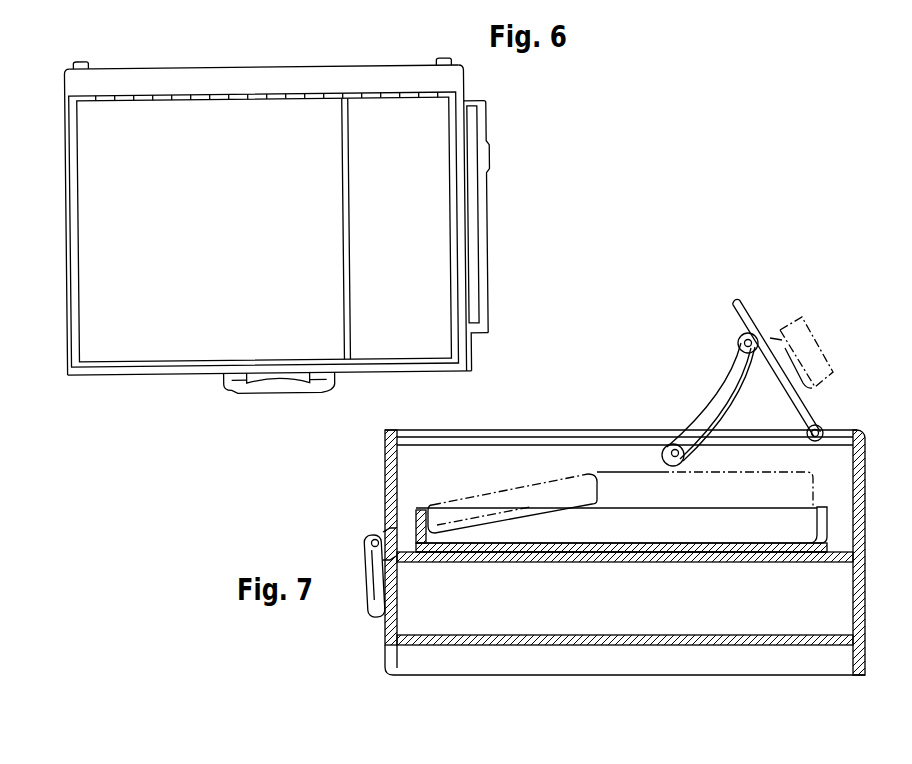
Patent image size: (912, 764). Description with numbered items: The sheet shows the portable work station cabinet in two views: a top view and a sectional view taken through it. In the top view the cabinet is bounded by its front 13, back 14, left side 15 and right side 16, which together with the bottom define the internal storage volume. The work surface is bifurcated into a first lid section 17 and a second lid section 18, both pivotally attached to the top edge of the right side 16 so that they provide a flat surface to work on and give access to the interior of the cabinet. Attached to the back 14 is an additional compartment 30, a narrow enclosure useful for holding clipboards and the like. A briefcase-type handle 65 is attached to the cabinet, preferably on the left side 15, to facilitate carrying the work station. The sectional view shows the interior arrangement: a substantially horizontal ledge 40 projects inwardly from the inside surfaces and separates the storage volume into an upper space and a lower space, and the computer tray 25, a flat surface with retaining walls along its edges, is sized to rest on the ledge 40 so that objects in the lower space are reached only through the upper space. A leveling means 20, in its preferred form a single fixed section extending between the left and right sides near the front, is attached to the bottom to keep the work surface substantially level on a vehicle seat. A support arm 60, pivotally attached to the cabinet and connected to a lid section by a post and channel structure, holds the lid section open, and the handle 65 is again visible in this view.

In FIG. 6, the front 13 is at (64, 316).
In FIG. 6, the back 14 is at (471, 350).
In FIG. 6, the left side 15 is at (124, 375).
In FIG. 6, the right side 16 is at (247, 67).
In FIG. 6, the first lid section 17 is at (102, 210).
In FIG. 6, the second lid section 18 is at (435, 127).
In FIG. 6, the additional compartment 30 is at (489, 277).
In FIG. 6, the handle 65 is at (262, 394).
In FIG. 7, the handle 65 is at (367, 620).
In FIG. 7, the leveling means 20 is at (540, 663).
In FIG. 7, the computer tray 25 is at (420, 522).
In FIG. 7, the ledge 40 is at (462, 563).
In FIG. 7, the support arm 60 is at (700, 385).